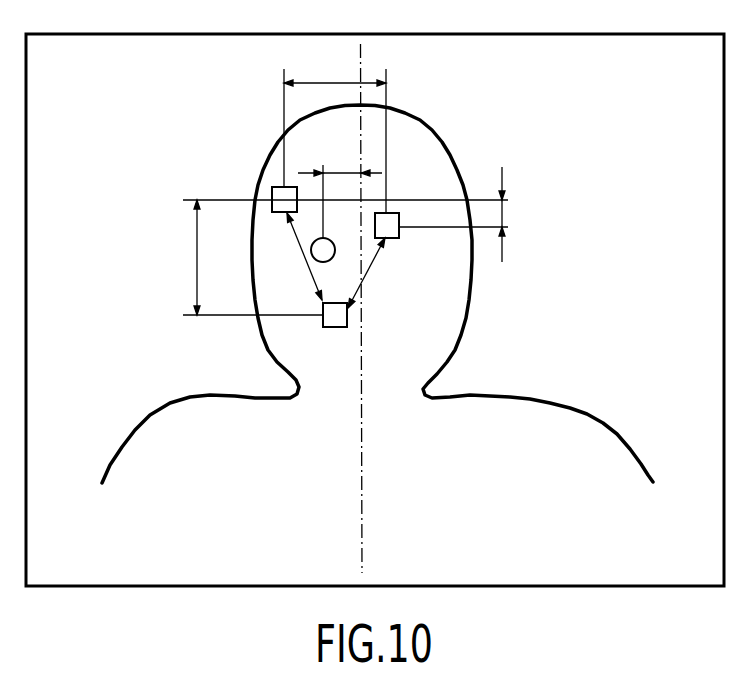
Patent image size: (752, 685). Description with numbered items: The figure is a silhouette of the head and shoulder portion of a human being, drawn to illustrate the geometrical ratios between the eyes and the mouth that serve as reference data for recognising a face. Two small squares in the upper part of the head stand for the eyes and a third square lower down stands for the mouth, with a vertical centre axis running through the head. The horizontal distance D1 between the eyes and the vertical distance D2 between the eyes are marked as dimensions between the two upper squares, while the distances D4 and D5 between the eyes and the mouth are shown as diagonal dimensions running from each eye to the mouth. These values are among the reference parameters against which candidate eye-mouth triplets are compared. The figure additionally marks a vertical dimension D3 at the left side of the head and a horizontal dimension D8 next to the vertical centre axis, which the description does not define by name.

The horizontal distance between the eyes D1 is at (340, 80).
The vertical distance between the eyes D2 is at (507, 214).
The vertical distance between upper left sensor and lower sensor D3 is at (197, 267).
The distance between eye and mouth D4 is at (305, 259).
The distance between eye and mouth D5 is at (373, 263).
The horizontal distance between reference marker and center line D8 is at (340, 189).